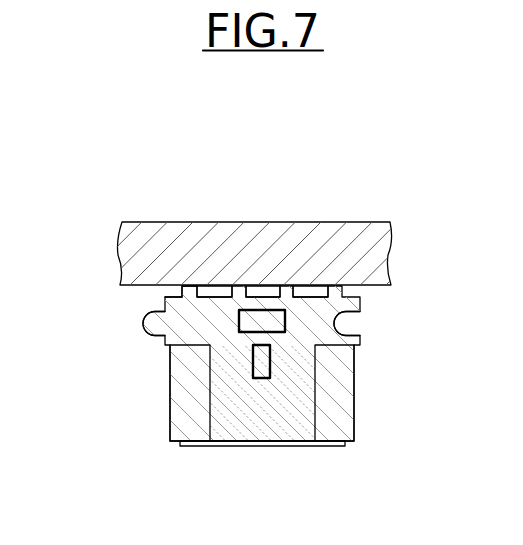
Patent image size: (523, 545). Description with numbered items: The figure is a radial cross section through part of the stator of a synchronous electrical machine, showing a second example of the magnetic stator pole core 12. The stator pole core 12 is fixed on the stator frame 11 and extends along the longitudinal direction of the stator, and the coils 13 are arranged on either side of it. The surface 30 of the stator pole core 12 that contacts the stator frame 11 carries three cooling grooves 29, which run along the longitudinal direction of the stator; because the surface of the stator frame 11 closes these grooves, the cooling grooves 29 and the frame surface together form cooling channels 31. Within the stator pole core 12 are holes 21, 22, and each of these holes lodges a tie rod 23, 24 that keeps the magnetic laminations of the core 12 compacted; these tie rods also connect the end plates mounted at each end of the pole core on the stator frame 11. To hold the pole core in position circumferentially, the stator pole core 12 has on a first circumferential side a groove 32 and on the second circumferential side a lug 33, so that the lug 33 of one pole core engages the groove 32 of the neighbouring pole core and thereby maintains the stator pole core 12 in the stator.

The stator frame 11 is at (172, 216).
The cooling channels 31 is at (340, 287).
The surface of the stator pole core 30 is at (167, 299).
The lug 33 is at (148, 325).
The groove 32 is at (350, 323).
The cooling grooves 29 is at (239, 317).
The hole 21 is at (255, 320).
The coils 13 is at (188, 418).
The tie rod 23 is at (300, 363).
The tie rod 24 is at (255, 379).
The hole 22 is at (270, 379).
The magnetic stator pole core 12 is at (298, 395).